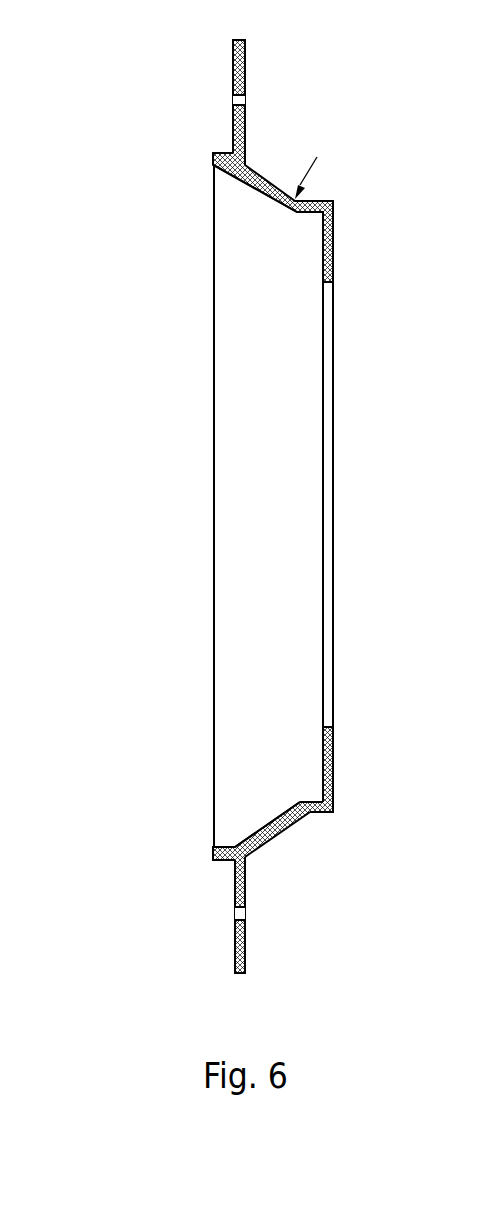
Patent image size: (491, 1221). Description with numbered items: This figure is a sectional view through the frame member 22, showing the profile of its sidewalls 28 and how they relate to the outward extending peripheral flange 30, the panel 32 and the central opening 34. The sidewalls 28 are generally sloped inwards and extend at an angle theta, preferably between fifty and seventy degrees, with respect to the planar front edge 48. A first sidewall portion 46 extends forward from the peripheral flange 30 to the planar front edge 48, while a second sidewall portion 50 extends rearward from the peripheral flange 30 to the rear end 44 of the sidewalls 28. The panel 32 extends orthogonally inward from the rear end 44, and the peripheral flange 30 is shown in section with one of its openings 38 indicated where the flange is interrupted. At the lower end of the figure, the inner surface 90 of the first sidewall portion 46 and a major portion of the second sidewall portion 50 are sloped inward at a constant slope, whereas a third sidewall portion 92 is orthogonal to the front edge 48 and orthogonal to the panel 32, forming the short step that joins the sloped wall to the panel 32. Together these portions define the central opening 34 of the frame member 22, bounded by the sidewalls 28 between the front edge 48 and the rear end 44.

The frame member 22 is at (232, 490).
The sidewalls 28 is at (278, 515).
The peripheral flange 30 is at (245, 75).
The panel 32 is at (333, 763).
The central opening 34 is at (325, 505).
The openings 38 is at (233, 102).
The rear end 44 is at (333, 218).
The first sidewall portion 46 is at (225, 862).
The planar front edge 48 is at (213, 507).
The second sidewall portion 50 is at (270, 828).
The inner surface 90 is at (260, 807).
The third sidewall portion 92 is at (313, 810).